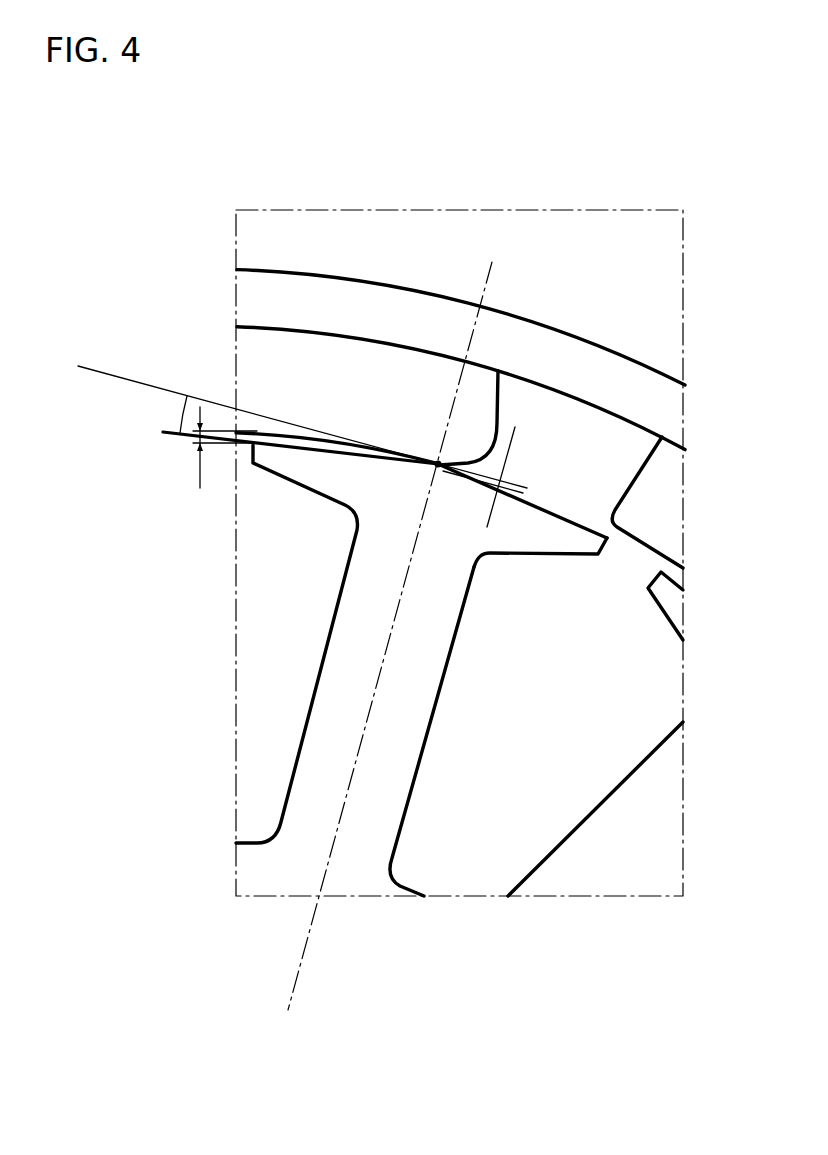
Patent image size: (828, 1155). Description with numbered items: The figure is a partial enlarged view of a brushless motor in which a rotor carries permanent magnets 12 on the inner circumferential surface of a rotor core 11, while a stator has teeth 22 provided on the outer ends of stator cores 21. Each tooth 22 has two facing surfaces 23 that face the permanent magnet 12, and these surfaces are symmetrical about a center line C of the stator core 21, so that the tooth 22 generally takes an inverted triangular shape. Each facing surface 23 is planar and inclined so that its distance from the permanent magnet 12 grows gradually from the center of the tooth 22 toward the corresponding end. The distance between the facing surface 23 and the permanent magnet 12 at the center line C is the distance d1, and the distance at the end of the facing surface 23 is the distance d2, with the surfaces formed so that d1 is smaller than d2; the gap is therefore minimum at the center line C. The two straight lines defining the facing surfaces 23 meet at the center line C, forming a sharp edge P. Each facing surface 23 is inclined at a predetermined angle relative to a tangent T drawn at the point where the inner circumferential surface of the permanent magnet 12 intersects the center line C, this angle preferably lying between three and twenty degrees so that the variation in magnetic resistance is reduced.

The rotor core 11 is at (563, 362).
The permanent magnet 12 is at (380, 367).
The stator core 21 is at (419, 693).
The tooth 22 is at (547, 542).
The facing surface 23 is at (345, 455).
The sharp edge P is at (435, 468).
The tangent T is at (291, 418).
The center line C is at (385, 650).
The distance at center line d1 is at (490, 477).
The distance at end of facing surface d2 is at (215, 447).